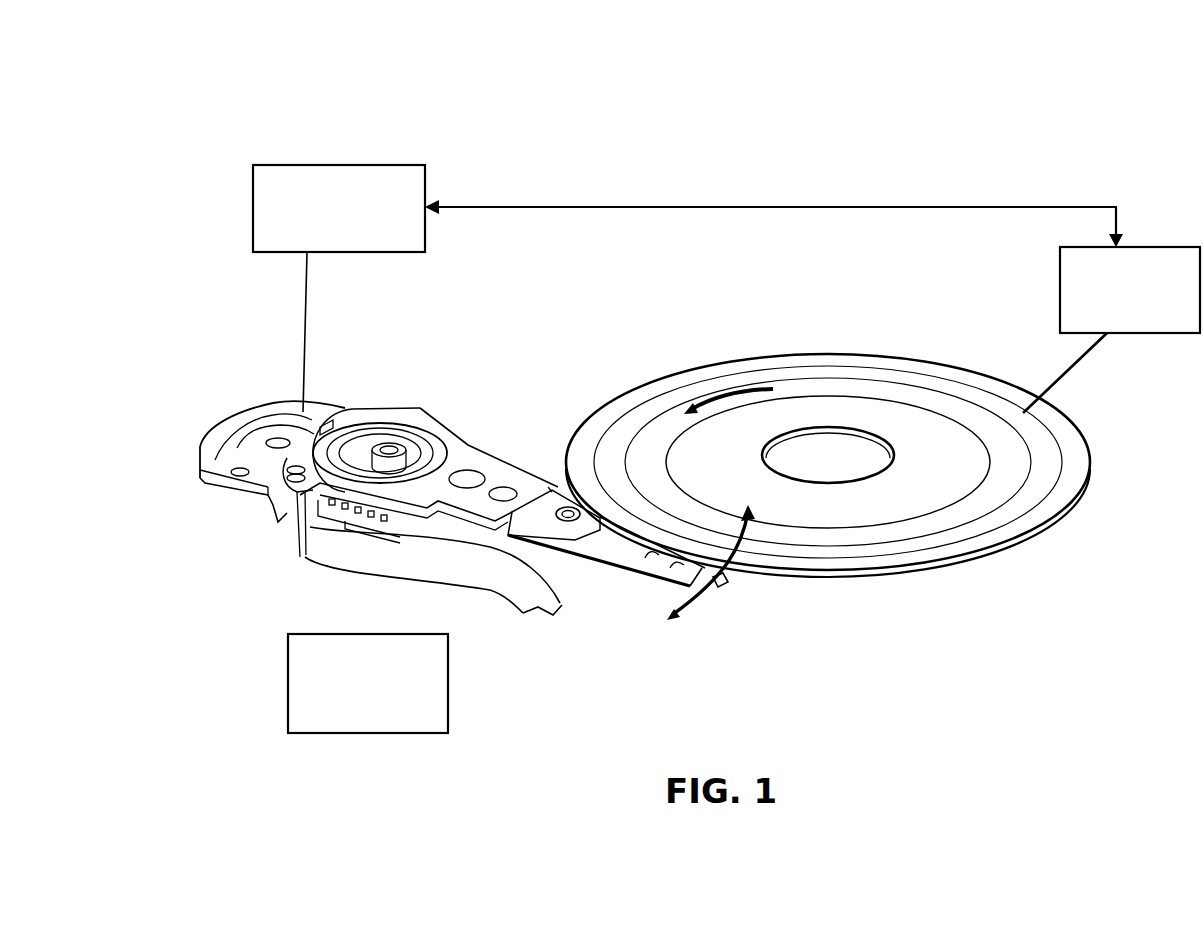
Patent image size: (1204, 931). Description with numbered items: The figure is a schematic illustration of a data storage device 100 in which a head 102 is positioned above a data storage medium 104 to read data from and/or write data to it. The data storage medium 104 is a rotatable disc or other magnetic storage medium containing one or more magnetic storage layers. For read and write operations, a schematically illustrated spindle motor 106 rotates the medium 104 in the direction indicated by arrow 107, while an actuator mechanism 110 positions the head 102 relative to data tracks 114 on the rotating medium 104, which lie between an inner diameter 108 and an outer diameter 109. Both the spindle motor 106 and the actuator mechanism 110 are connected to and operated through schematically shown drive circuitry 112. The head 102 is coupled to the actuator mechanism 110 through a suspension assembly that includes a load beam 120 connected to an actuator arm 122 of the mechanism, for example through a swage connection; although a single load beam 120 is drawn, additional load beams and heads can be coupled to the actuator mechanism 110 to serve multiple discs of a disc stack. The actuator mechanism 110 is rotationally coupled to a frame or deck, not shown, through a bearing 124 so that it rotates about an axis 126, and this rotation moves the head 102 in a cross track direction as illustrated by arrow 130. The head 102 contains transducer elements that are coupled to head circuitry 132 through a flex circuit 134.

The data storage device 100 is at (1005, 152).
The head 102 is at (722, 583).
The data storage medium 104 is at (952, 365).
The spindle motor 106 is at (1167, 247).
The arrow 107 is at (738, 391).
The inner diameter 108 is at (868, 427).
The outer diameter 109 is at (833, 355).
The actuator mechanism 110 is at (413, 395).
The drive circuitry 112 is at (423, 176).
The data tracks 114 is at (970, 485).
The load beam 120 is at (625, 540).
The actuator arm 122 is at (517, 469).
The bearing 124 is at (382, 443).
The axis 126 is at (391, 391).
The arrow 130 is at (740, 549).
The head circuitry 132 is at (447, 683).
The flex circuit 134 is at (368, 634).